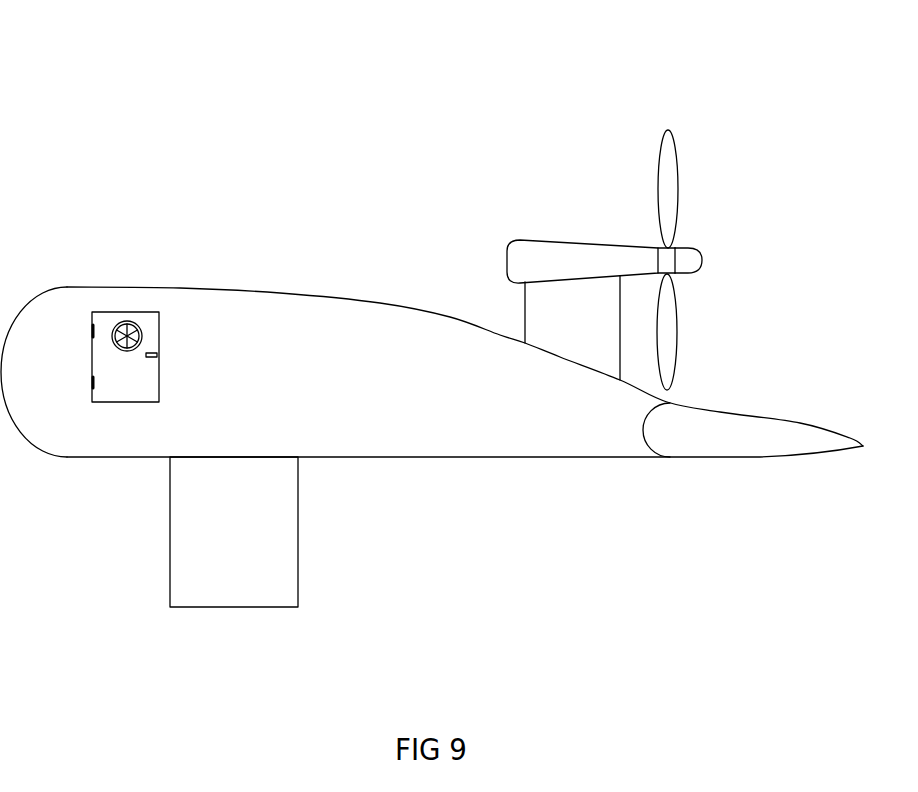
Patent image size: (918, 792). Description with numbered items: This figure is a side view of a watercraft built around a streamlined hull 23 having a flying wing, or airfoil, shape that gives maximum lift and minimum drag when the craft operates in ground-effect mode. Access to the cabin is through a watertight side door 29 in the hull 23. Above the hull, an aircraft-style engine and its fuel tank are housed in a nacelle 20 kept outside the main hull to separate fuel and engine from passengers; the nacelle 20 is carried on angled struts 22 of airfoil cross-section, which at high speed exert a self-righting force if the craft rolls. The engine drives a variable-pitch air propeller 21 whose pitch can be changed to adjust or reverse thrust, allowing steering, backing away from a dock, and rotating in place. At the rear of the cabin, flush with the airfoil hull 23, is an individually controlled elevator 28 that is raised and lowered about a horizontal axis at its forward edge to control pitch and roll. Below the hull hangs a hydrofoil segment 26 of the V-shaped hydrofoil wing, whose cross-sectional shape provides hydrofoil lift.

The nacelle 20 is at (556, 254).
The variable-pitch air propeller 21 is at (667, 172).
The angled strut 22 is at (535, 327).
The hull 23 is at (475, 433).
The hydrofoil segment 26 is at (281, 524).
The elevator 28 is at (752, 432).
The watertight side door 29 is at (102, 322).